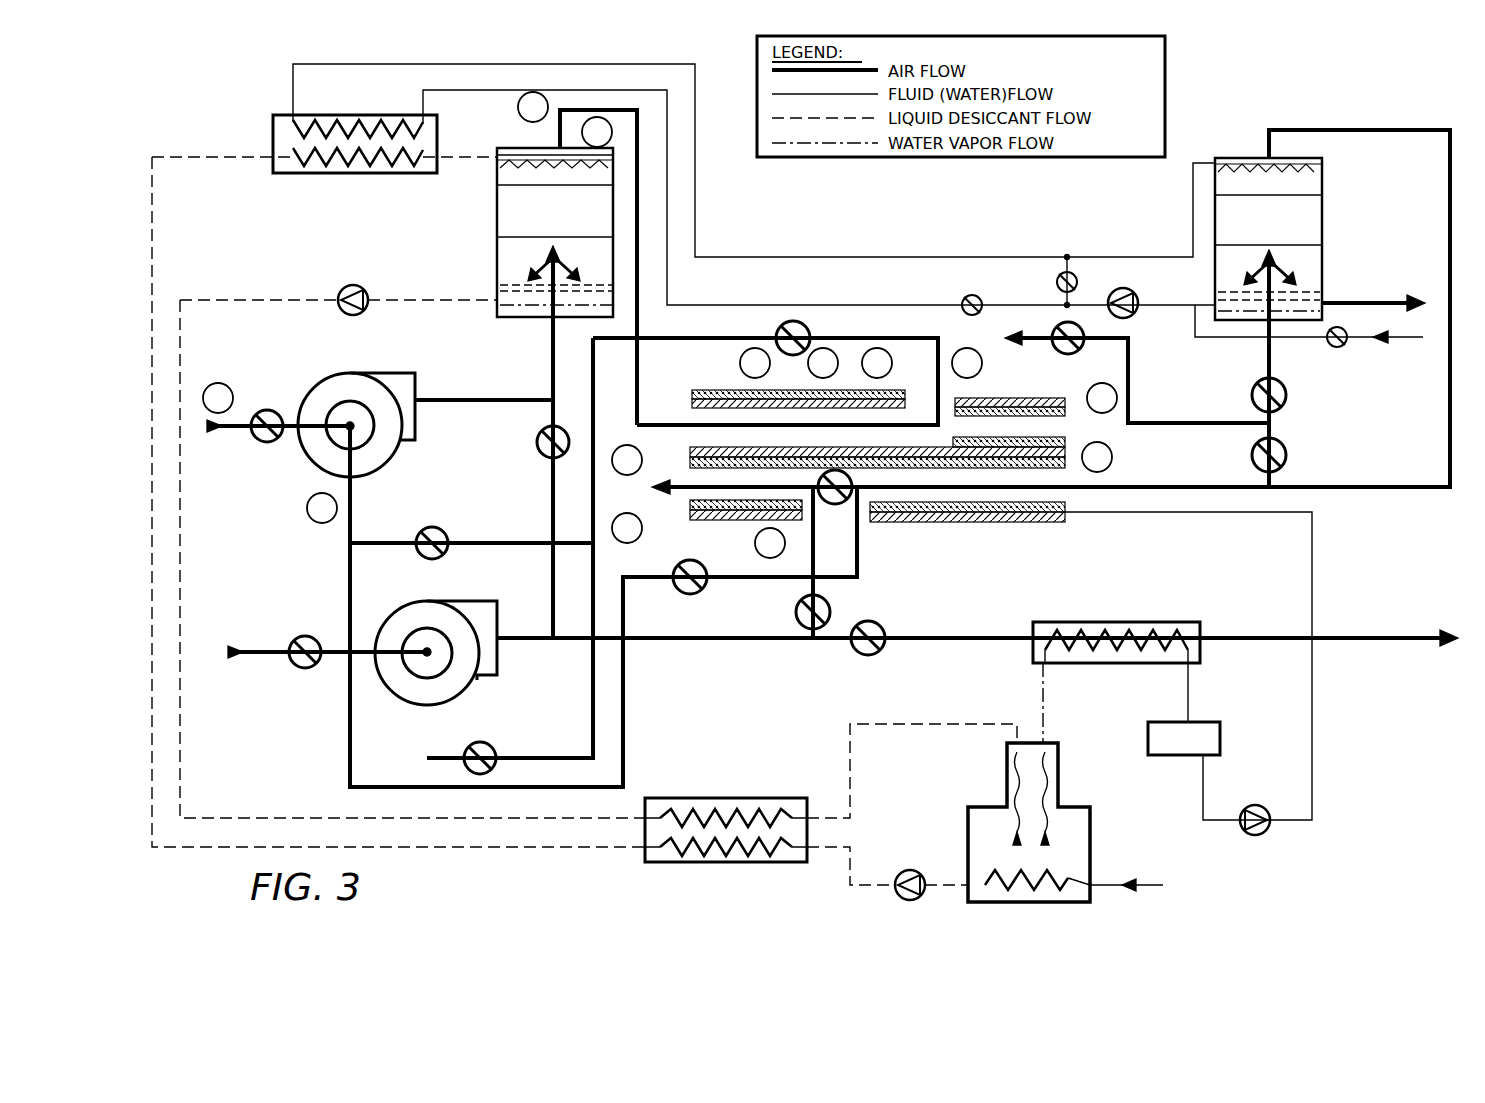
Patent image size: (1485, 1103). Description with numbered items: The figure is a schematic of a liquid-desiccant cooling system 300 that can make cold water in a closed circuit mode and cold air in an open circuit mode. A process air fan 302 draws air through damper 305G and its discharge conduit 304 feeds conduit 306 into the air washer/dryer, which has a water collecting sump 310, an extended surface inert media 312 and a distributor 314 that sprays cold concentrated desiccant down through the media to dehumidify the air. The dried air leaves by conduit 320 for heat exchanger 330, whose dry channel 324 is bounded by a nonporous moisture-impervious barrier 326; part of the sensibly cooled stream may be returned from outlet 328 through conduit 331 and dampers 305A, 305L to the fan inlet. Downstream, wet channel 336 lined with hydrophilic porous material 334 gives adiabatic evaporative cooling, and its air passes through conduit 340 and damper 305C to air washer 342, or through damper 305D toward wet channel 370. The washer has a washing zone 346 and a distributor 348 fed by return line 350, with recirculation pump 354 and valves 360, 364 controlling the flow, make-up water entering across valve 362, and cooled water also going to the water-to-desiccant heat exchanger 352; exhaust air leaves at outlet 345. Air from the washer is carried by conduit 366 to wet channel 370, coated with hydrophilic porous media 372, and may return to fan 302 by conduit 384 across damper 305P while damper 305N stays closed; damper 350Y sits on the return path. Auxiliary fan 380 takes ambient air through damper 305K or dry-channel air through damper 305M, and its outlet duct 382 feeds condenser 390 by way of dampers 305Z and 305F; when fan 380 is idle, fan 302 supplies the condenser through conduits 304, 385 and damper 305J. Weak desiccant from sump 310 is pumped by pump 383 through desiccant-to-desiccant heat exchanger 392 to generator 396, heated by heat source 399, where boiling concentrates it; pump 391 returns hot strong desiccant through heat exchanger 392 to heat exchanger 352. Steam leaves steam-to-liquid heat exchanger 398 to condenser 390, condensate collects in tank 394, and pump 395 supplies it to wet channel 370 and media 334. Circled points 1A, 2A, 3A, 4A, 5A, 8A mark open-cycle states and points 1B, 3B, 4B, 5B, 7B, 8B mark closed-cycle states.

The system 300 is at (932, 208).
The process air fan 302 is at (356, 372).
The discharge conduit 304 is at (508, 385).
The damper 305A is at (764, 332).
The damper 305C is at (1287, 396).
The damper 305D is at (1287, 456).
The damper 305F is at (880, 650).
The damper 305G is at (258, 410).
The damper 305J is at (537, 442).
The damper 305K is at (312, 633).
The damper 305L is at (420, 530).
The damper 305M is at (486, 742).
The damper 305N is at (835, 505).
The damper 305P is at (697, 595).
The damper 305Z is at (795, 612).
The conduit 306 is at (551, 328).
The water collecting sump 310 is at (497, 290).
The extended surface inert media 312 is at (507, 210).
The distributor 314 is at (523, 150).
The conduit 320 is at (624, 110).
The dry channel 324 is at (710, 437).
The nonporous moisture-impervious barrier 326 is at (690, 394).
The outlet 328 is at (922, 378).
The heat exchanger 330 is at (853, 360).
The conduit 331 is at (700, 318).
The hydrophilic porous material 334 is at (1066, 405).
The wet channel 336 is at (987, 398).
The conduit 340 is at (1140, 418).
The air washer 342 is at (1322, 246).
The exhaust air outlet 345 is at (1390, 300).
The intermediate washing zone 346 is at (1322, 202).
The distributor 348 is at (1240, 158).
The return line 350 is at (1152, 300).
The damper valve 350Y is at (1056, 330).
The water-to-desiccant heat exchanger 352 is at (355, 115).
The recirculation pump 354 is at (1134, 318).
The valve 360 is at (962, 300).
The valve 362 is at (1347, 345).
The valve 364 is at (1078, 278).
The conduit 366 is at (1448, 392).
The wet channel 370 is at (958, 505).
The hydrophilic porous media 372 is at (705, 388).
The auxiliary fan 380 is at (444, 600).
The air duct 382 is at (505, 636).
The pump 383 is at (365, 290).
The conduit 384 is at (623, 722).
The conduit 385 is at (975, 636).
The condenser 390 is at (1113, 622).
The pump 391 is at (908, 858).
The desiccant-to-desiccant heat exchanger 392 is at (762, 798).
The condensate tank 394 is at (1203, 722).
The pump 395 is at (1265, 832).
The generator 396 is at (1090, 838).
The steam-to-liquid heat exchanger 398 is at (1060, 772).
The heat source 399 is at (1094, 888).
The state point 1A is at (218, 398).
The process condition point 1B is at (322, 508).
The state point 2A is at (583, 182).
The state point 3A is at (797, 425).
The process condition point 3B is at (783, 390).
The state point 4A is at (942, 400).
The process condition point 4B is at (900, 390).
The state point 5A is at (1068, 438).
The process condition point 5B is at (1068, 440).
The process condition point 7B is at (792, 494).
The state point 8A is at (652, 486).
The process condition point 8B is at (652, 489).